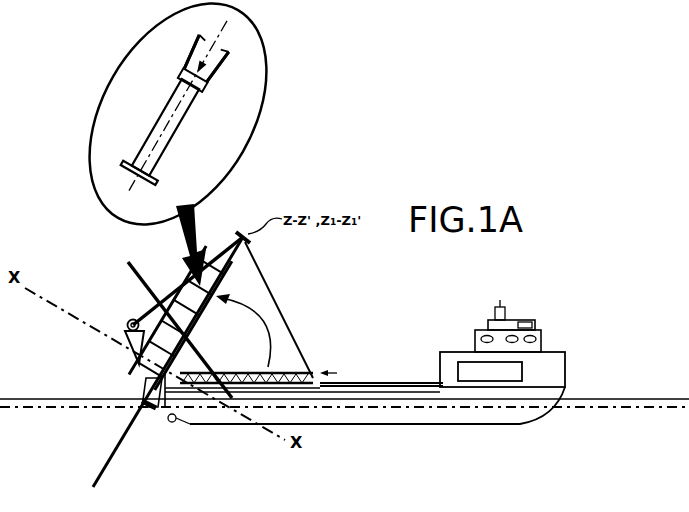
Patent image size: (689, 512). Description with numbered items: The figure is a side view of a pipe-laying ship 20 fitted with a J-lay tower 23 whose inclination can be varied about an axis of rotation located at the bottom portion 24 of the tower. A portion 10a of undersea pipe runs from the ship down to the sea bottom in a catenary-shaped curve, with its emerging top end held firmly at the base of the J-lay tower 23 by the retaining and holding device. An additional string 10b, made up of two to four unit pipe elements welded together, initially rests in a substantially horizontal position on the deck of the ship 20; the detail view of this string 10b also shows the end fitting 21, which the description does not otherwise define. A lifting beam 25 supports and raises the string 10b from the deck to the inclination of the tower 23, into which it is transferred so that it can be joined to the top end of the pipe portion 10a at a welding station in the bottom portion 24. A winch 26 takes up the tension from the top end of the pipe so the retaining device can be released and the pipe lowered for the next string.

The undersea pipe portion 10a is at (123, 437).
The additional string 10b is at (176, 133).
The pipe-laying ship 20 is at (556, 323).
The gripper arms 21 is at (227, 72).
The J-lay tower 23 is at (235, 273).
The bottom portion of the tower 24 is at (160, 374).
The lifting beam 25 is at (300, 385).
The winch 26 is at (127, 322).